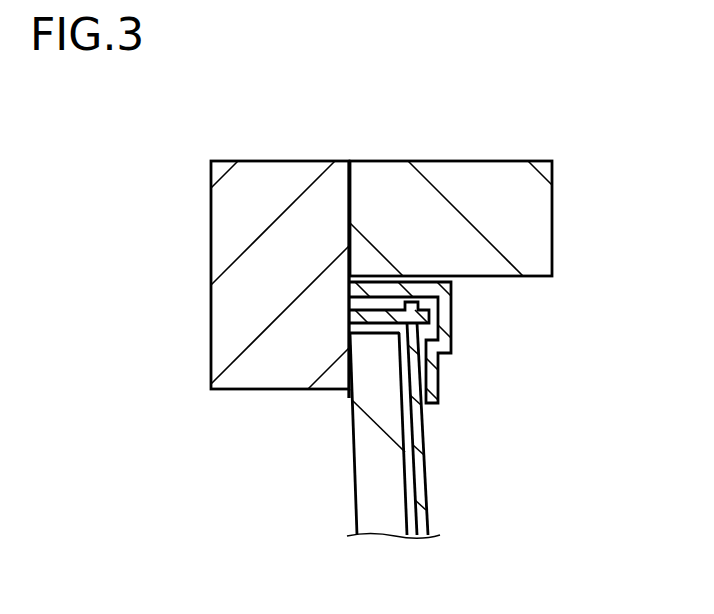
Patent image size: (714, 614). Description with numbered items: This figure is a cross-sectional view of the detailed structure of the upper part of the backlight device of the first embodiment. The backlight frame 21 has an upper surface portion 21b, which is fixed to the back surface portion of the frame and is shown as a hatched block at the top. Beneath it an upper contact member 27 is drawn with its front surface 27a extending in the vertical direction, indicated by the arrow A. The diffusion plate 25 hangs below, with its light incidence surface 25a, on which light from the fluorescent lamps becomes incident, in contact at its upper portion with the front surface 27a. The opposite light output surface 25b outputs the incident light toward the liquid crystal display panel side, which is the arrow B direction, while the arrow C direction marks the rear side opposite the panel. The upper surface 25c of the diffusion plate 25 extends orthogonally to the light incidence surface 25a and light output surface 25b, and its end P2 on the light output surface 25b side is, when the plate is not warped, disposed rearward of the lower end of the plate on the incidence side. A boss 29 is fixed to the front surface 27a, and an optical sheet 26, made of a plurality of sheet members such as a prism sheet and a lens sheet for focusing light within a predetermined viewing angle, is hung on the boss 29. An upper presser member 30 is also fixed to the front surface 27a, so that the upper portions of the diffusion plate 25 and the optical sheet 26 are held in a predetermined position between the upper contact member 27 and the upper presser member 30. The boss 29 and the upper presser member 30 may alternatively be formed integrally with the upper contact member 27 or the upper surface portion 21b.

The backlight frame 21 is at (451, 196).
The upper surface portion 21b is at (460, 176).
The diffusion plate 25 is at (383, 451).
The light incidence surface 25a is at (355, 453).
The light output surface 25b is at (407, 474).
The upper surface 25c is at (350, 331).
The optical sheet 26 is at (422, 522).
The upper contact member 27 is at (273, 176).
The front surface 27a is at (351, 200).
The boss 29 is at (431, 317).
The upper presser member 30 is at (433, 373).
The end of the upper surface P2 is at (398, 335).
The vertical direction A is at (131, 292).
The arrow B direction B is at (455, 96).
The arrow C direction C is at (345, 95).